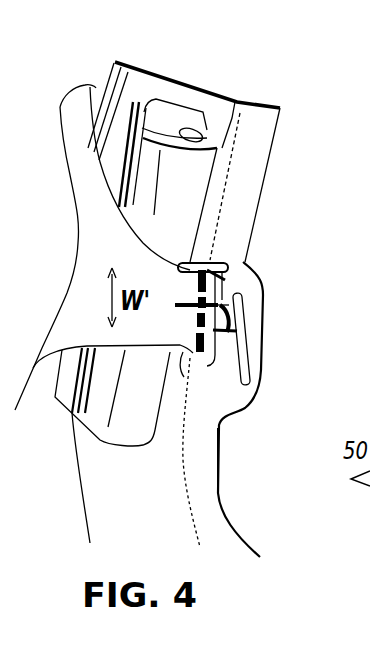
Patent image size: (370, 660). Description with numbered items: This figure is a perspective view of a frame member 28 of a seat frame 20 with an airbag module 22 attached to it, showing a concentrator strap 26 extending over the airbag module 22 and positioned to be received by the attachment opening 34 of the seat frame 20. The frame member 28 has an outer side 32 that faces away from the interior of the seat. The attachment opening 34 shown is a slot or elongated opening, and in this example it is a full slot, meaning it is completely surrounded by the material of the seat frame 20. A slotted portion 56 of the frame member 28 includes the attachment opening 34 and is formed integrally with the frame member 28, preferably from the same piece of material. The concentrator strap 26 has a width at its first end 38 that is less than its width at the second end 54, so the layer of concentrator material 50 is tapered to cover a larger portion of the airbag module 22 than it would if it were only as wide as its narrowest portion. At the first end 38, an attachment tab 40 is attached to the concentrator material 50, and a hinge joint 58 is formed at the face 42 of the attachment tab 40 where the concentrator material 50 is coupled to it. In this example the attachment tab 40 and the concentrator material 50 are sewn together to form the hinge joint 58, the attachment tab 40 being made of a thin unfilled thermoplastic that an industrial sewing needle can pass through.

The seat frame 20 is at (160, 76).
The airbag module 22 is at (170, 110).
The concentrator strap 26 is at (141, 225).
The frame member 28 is at (270, 138).
The outer side 32 is at (238, 102).
The attachment opening 34 is at (247, 303).
The first end 38 is at (176, 355).
The attachment tab 40 is at (187, 264).
The face 42 is at (197, 356).
The concentrator material 50 is at (141, 348).
The second end 54 is at (64, 161).
The slotted portion 56 is at (253, 280).
The hinge joint 58 is at (220, 267).